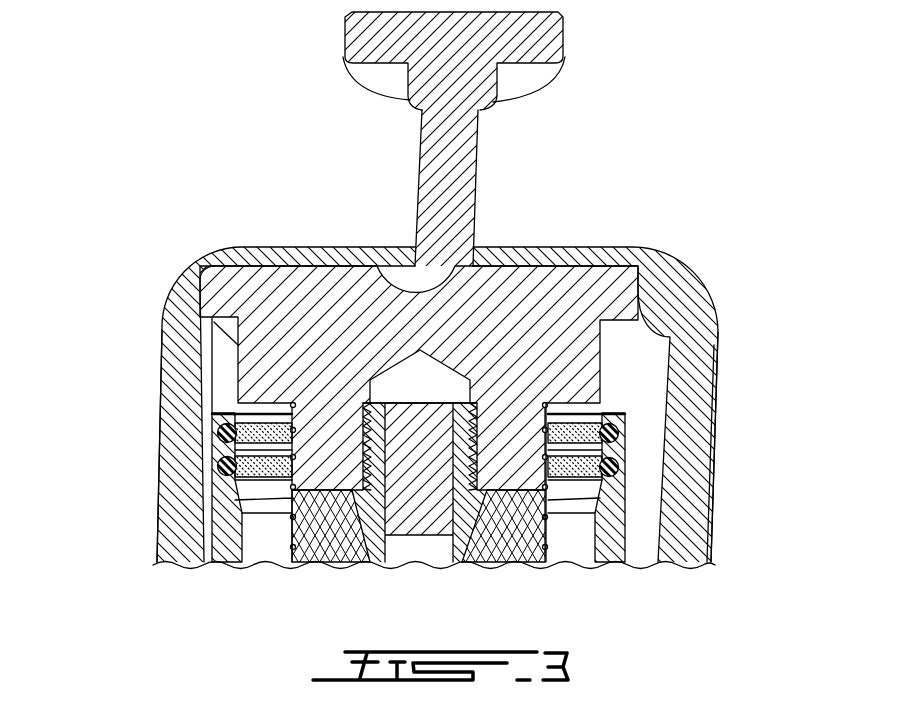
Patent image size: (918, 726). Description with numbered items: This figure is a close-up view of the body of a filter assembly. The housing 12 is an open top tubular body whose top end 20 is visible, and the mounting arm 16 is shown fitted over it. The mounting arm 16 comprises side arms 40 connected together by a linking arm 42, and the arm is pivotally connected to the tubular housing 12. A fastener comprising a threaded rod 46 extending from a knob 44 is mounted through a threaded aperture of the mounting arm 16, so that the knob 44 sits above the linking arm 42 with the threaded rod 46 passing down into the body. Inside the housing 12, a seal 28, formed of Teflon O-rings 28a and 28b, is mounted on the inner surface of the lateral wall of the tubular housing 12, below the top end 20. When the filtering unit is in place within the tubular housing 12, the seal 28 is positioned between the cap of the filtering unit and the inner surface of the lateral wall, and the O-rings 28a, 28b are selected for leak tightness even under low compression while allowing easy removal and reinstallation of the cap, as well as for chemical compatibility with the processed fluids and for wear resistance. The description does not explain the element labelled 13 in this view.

The housing 12 is at (627, 550).
The bore 13 is at (580, 533).
The mounting arm 16 is at (640, 243).
The top end 20 is at (622, 403).
The seal 28 is at (212, 505).
The O-ring 28a is at (618, 430).
The O-ring 28b is at (618, 467).
The side arms 40 is at (162, 363).
The linking arm 42 is at (323, 247).
The knob 44 is at (566, 40).
The threaded rod 46 is at (477, 168).